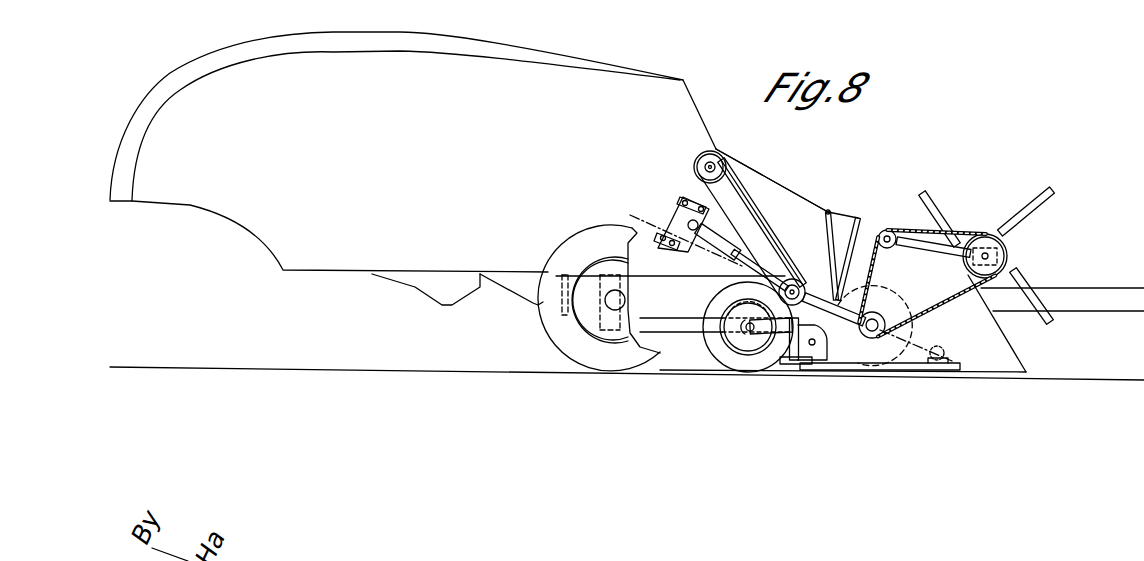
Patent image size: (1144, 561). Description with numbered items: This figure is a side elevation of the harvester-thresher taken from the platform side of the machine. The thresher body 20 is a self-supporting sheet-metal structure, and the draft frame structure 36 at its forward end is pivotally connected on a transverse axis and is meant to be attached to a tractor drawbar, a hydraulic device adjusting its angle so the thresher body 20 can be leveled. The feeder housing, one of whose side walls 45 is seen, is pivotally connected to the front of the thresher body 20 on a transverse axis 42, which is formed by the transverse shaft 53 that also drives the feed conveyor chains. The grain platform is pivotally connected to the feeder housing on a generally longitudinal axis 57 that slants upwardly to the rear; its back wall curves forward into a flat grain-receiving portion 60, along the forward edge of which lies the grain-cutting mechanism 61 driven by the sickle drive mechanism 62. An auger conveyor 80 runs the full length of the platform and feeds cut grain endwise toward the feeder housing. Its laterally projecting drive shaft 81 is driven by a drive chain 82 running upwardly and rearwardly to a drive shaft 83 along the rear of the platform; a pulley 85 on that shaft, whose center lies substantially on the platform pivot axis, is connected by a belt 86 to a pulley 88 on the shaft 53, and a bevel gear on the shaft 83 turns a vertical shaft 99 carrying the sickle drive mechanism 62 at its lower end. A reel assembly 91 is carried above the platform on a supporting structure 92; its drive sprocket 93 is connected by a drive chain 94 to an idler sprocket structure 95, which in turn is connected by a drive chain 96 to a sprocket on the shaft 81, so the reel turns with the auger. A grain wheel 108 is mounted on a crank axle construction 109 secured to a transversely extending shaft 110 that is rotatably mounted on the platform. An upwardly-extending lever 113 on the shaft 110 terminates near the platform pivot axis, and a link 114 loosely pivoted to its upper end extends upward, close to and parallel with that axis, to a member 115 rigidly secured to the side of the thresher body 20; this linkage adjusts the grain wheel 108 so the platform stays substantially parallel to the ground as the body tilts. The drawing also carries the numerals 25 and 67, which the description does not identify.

The thresher body 20 is at (612, 80).
The disc 25 is at (553, 323).
The draft frame structure 36 is at (1106, 293).
The transverse axis 42 is at (717, 153).
The side wall 45 is at (790, 198).
The transverse shaft 53 is at (705, 167).
The axis 57 is at (910, 342).
The flat grain-receiving portion 60 is at (903, 373).
The grain-cutting mechanism 61 is at (943, 372).
The sickle drive mechanism 62 is at (810, 370).
The pivot 67 is at (942, 343).
The auger conveyor 80 is at (917, 297).
The drive shaft 81 is at (877, 334).
The drive chain 82 is at (866, 332).
The drive shaft 83 is at (781, 292).
The pulley 85 is at (787, 263).
The belt 86 is at (755, 207).
The pulley 88 is at (704, 179).
The reel assembly 91 is at (1040, 204).
The supporting structure 92 is at (859, 217).
The drive sprocket 93 is at (983, 240).
The drive chain 94 is at (930, 229).
The idler sprocket structure 95 is at (888, 231).
The drive chain 96 is at (888, 271).
The vertical shaft 99 is at (788, 330).
The grain wheel 108 is at (713, 347).
The crank axle construction 109 is at (782, 343).
The transversely extending shaft 110 is at (815, 348).
The upwardly-extending lever 113 is at (776, 313).
The link 114 is at (718, 274).
The member 115 is at (680, 212).